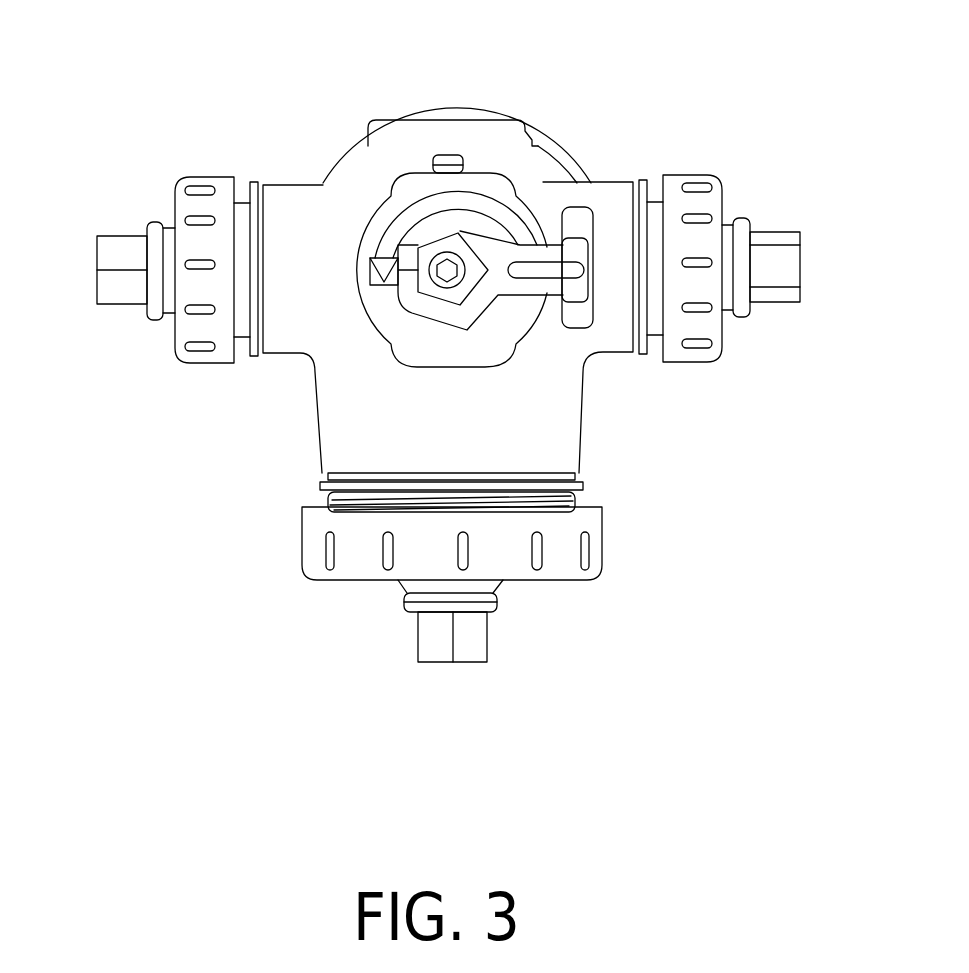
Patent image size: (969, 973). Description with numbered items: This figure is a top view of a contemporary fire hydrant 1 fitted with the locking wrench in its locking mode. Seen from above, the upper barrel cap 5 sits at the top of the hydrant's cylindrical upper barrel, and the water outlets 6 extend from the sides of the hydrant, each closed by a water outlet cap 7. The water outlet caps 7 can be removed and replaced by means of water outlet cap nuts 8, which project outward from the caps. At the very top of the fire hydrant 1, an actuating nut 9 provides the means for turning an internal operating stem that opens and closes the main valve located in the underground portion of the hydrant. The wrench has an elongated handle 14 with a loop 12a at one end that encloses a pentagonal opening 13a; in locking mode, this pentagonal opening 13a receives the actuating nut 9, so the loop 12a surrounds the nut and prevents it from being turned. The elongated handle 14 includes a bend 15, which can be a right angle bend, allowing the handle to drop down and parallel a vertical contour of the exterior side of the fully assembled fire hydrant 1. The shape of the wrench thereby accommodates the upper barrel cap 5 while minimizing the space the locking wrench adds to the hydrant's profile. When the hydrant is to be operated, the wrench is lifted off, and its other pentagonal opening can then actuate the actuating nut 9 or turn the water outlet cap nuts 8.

The fire hydrant 1 is at (202, 50).
The upper barrel cap 5 is at (514, 345).
The water outlets 6 is at (645, 178).
The water outlet caps 7 is at (725, 180).
The water outlet cap nuts 8 is at (97, 278).
The actuating nut 9 is at (396, 220).
The loop 12a is at (443, 225).
The pentagonal opening 13a is at (455, 232).
The elongated handle 14 is at (543, 243).
The bend 15 is at (592, 277).